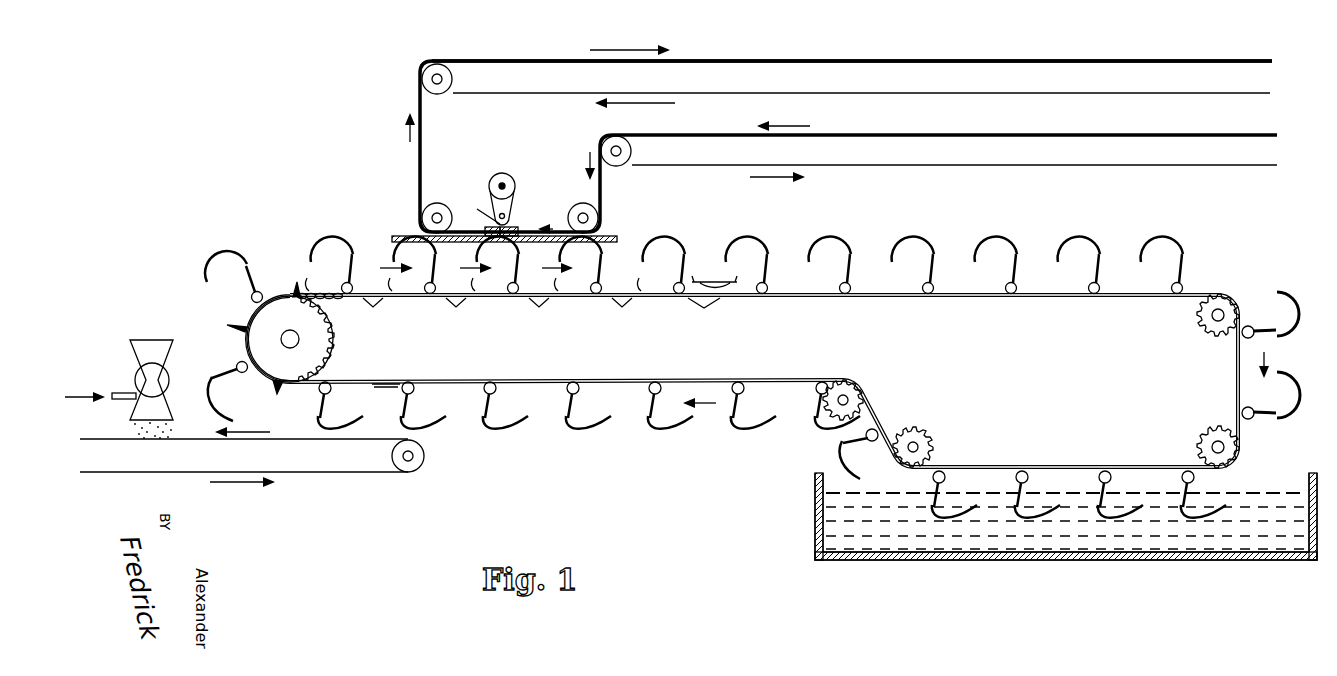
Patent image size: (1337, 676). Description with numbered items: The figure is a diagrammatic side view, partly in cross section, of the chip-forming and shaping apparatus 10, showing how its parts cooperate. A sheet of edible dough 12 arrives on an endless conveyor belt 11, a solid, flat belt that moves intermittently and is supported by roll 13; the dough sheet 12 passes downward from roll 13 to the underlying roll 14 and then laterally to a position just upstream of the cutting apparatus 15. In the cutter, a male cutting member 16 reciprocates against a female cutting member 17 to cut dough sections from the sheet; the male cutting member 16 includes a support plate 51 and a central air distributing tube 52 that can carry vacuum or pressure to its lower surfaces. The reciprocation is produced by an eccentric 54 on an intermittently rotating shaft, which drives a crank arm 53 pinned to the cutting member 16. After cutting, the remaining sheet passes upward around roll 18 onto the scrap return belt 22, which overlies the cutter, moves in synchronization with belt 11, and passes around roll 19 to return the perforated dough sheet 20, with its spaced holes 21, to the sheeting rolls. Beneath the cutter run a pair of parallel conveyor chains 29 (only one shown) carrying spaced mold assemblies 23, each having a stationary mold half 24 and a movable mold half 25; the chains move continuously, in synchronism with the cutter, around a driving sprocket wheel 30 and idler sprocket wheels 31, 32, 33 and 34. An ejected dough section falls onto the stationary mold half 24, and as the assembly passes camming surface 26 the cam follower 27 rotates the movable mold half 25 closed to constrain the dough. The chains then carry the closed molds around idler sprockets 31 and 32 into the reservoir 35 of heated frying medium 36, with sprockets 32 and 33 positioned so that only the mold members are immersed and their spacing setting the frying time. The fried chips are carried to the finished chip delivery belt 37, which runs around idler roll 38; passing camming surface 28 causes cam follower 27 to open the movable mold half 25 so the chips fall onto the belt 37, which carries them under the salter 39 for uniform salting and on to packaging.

The chip-forming and shaping apparatus 10 is at (752, 358).
The endless conveyor belt 11 is at (900, 165).
The sheet of edible dough 12 is at (668, 135).
The roll 13 is at (614, 160).
The roll 14 is at (598, 218).
The cutting apparatus 15 is at (504, 172).
The male cutting member 16 is at (512, 229).
The female cutting member 17 is at (557, 243).
The roll 18 is at (436, 203).
The roll 19 is at (439, 90).
The perforated dough sheet 20 is at (418, 167).
The spaced holes 21 is at (422, 150).
The scrap return belt 22 is at (897, 61).
The mold assembly 23 is at (937, 256).
The stationary mold half 24 is at (512, 257).
The movable mold half 25 is at (554, 306).
The camming surface 26 is at (712, 280).
The cam follower 27 is at (673, 283).
The camming surface 28 is at (384, 389).
The conveyor chain 29 is at (332, 292).
The driving sprocket wheel 30 is at (332, 341).
The idler sprocket wheel 31 is at (1197, 319).
The idler sprocket wheel 32 is at (1198, 439).
The idler sprocket wheel 33 is at (933, 444).
The idler sprocket wheel 34 is at (853, 392).
The reservoir 35 is at (814, 508).
The frying medium 36 is at (925, 543).
The finished chip delivery belt 37 is at (372, 472).
The idler roll 38 is at (425, 457).
The salter 39 is at (128, 355).
The support plate 51 is at (486, 231).
The central air distributing tube 52 is at (477, 209).
The crank arm 53 is at (514, 194).
The eccentric 54 is at (504, 176).